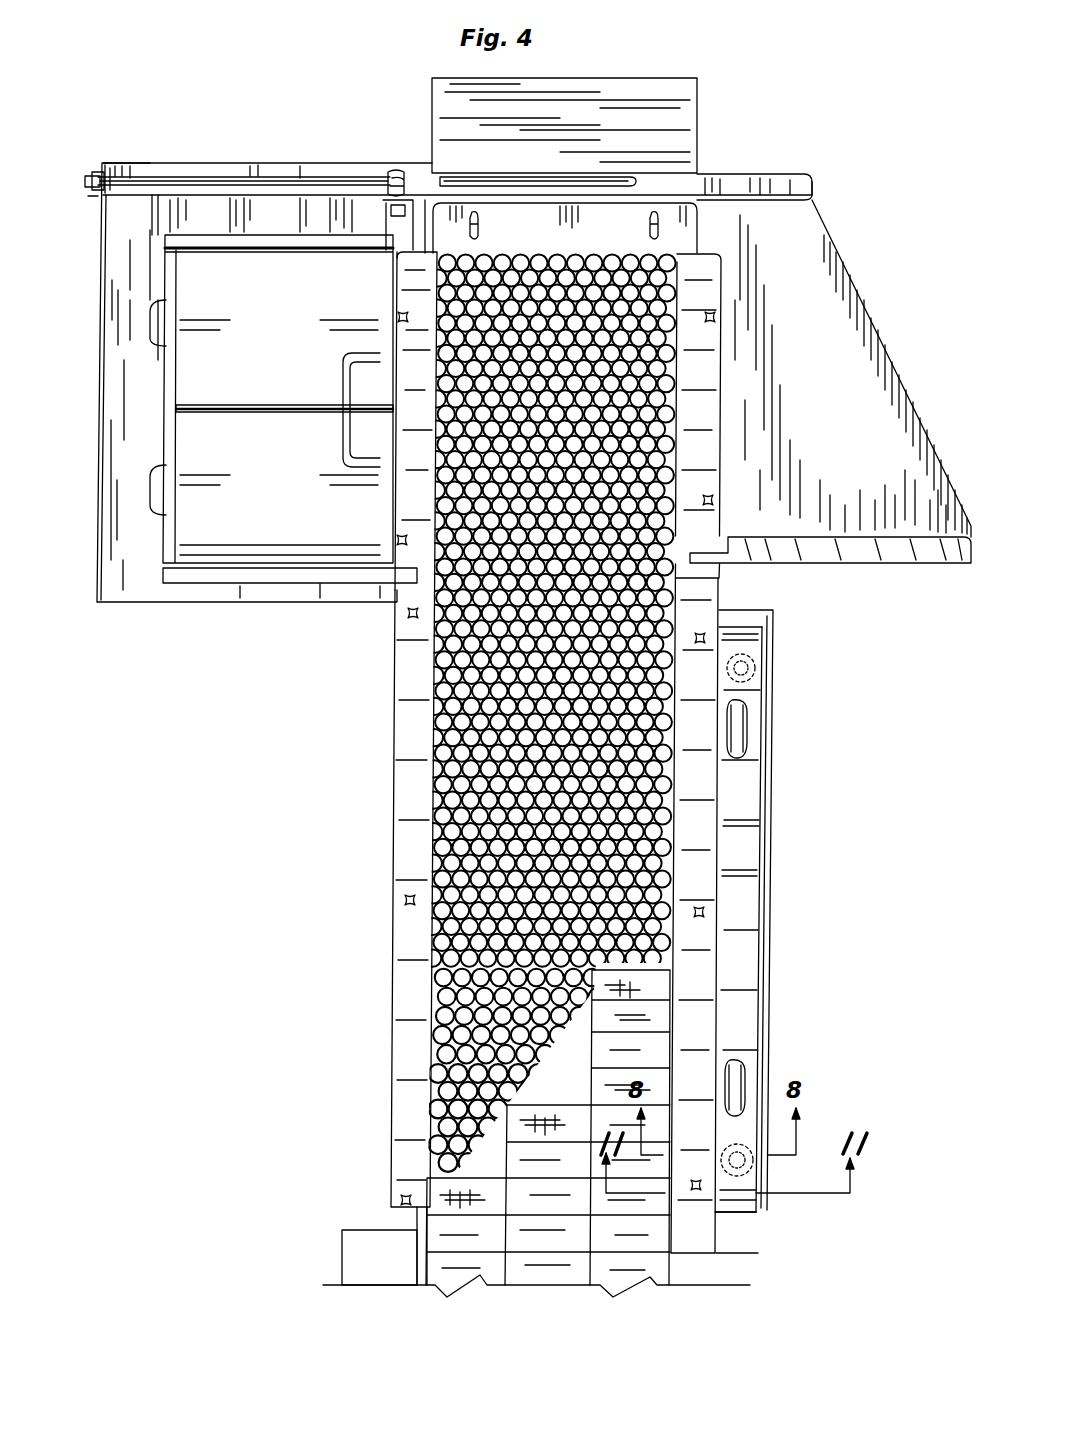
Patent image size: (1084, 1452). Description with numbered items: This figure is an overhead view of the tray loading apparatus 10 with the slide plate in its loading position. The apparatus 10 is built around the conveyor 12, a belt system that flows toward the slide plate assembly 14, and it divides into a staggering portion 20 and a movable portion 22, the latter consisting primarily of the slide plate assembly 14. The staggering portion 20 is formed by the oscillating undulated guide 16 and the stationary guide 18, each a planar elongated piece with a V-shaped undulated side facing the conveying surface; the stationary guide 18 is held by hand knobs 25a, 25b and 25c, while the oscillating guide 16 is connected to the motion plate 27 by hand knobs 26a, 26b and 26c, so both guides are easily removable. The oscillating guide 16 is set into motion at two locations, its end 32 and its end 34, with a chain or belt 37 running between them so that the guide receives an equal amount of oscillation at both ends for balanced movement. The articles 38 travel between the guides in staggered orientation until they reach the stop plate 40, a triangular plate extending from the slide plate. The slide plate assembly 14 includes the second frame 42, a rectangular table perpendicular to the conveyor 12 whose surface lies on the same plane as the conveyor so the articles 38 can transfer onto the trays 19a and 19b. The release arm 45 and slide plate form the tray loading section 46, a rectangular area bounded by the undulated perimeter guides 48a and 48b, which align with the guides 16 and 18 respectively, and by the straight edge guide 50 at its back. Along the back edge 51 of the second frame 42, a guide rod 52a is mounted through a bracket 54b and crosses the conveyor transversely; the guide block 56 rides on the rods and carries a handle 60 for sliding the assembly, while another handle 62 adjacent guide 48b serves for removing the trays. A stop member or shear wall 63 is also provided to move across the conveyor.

The tray loading apparatus 10 is at (172, 142).
The bracket 54b is at (92, 166).
The back edge 51 is at (283, 177).
The guide rod 52a is at (390, 178).
The straight edge guide 50 is at (496, 240).
The handle 60 is at (600, 180).
The tray loading section 46 is at (634, 208).
The movable portion 22 is at (790, 166).
The guide block 56 is at (806, 186).
The release arm 45 is at (393, 270).
The tray 19a is at (284, 338).
The handle 62 is at (343, 382).
The tray 19b is at (284, 494).
The undulated perimeter guide 48b is at (404, 508).
The undulated perimeter guide 48a is at (700, 428).
The slide plate assembly 14 is at (850, 372).
The stop plate 40 is at (895, 456).
The stop member or shear wall 63 is at (950, 552).
The second frame 42 is at (200, 606).
The hand knob 26a is at (408, 616).
The hand knob 26b is at (406, 902).
The hand knob 26c is at (400, 1210).
The hand knob 25a is at (700, 632).
The hand knob 25b is at (699, 905).
The hand knob 25c is at (696, 1192).
The end 34 is at (745, 632).
The chain or belt 37 is at (742, 720).
The articles 38 is at (460, 710).
The stationary guide 18 is at (412, 805).
The oscillating undulated guide 16 is at (695, 826).
The staggering portion 20 is at (775, 852).
The motion plate 27 is at (742, 942).
The end 32 is at (742, 1212).
The conveyor 12 is at (498, 1262).